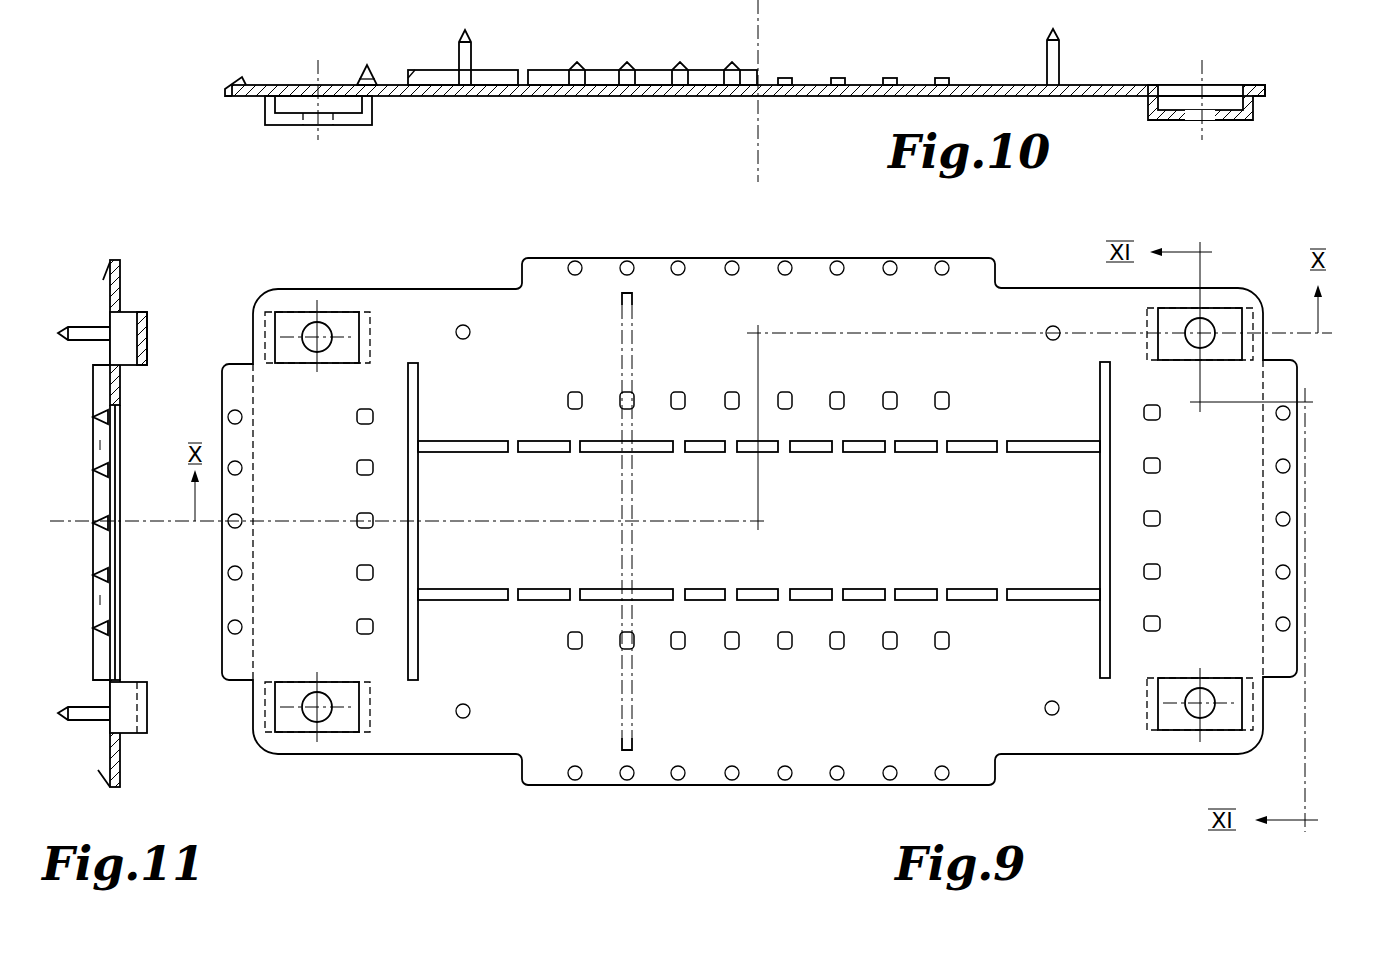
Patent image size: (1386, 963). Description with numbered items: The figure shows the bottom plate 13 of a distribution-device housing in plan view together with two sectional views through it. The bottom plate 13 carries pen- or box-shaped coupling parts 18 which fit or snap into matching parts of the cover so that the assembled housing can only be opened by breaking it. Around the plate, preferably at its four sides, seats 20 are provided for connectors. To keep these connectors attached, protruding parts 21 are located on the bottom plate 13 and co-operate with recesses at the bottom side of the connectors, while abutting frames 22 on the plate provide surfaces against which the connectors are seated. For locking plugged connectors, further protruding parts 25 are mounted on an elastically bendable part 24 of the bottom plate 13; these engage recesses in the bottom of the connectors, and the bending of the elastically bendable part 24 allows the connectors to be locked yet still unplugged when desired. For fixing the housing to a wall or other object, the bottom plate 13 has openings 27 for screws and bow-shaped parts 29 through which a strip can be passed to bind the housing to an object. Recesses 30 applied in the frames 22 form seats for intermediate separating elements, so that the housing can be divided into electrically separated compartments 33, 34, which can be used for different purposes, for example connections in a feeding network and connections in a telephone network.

In FIG. 10, the bottom plate 13 is at (812, 92).
In FIG. 9, the bottom plate 13 is at (1000, 310).
In FIG. 10, the coupling parts 18 is at (468, 53).
In FIG. 11, the coupling parts 18 is at (80, 328).
In FIG. 9, the coupling parts 18 is at (470, 337).
In FIG. 11, the seats 20 is at (109, 523).
In FIG. 9, the seats 20 is at (846, 308).
In FIG. 9, the protruding parts 21 is at (362, 470).
In FIG. 9, the abutting frames 22 is at (540, 448).
In FIG. 11, the elastically bendable part 24 is at (232, 382).
In FIG. 9, the elastically bendable part 24 is at (528, 268).
In FIG. 11, the protruding parts 25 is at (100, 522).
In FIG. 9, the protruding parts 25 is at (830, 262).
In FIG. 10, the openings 27 is at (1212, 120).
In FIG. 9, the openings 27 is at (1207, 328).
In FIG. 10, the bow-shaped parts 29 is at (360, 125).
In FIG. 11, the bow-shaped parts 29 is at (147, 318).
In FIG. 9, the bow-shaped parts 29 is at (338, 322).
In FIG. 9, the recesses 30 is at (1002, 454).
In FIG. 9, the compartment 33 is at (575, 318).
In FIG. 9, the compartment 34 is at (655, 300).